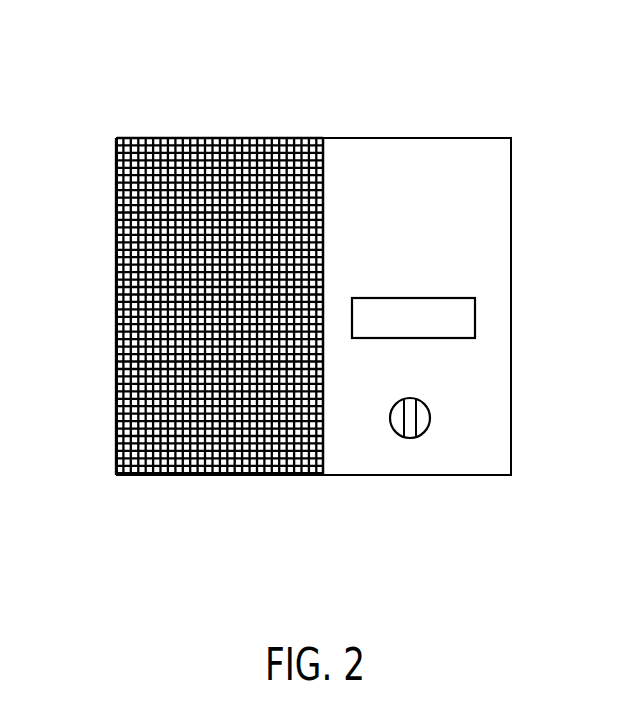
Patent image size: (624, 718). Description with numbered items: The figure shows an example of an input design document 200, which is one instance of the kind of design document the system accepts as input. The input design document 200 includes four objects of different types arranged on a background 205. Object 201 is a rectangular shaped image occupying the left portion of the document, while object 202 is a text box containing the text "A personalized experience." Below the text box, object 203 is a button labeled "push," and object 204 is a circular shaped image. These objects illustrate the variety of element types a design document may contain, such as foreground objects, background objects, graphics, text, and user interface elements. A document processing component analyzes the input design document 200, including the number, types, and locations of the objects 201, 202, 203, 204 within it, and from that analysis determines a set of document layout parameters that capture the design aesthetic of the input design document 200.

The input design document 200 is at (92, 48).
The object 201 is at (172, 296).
The object 202 is at (475, 252).
The object 203 is at (483, 327).
The object 204 is at (435, 441).
The background 205 is at (485, 463).